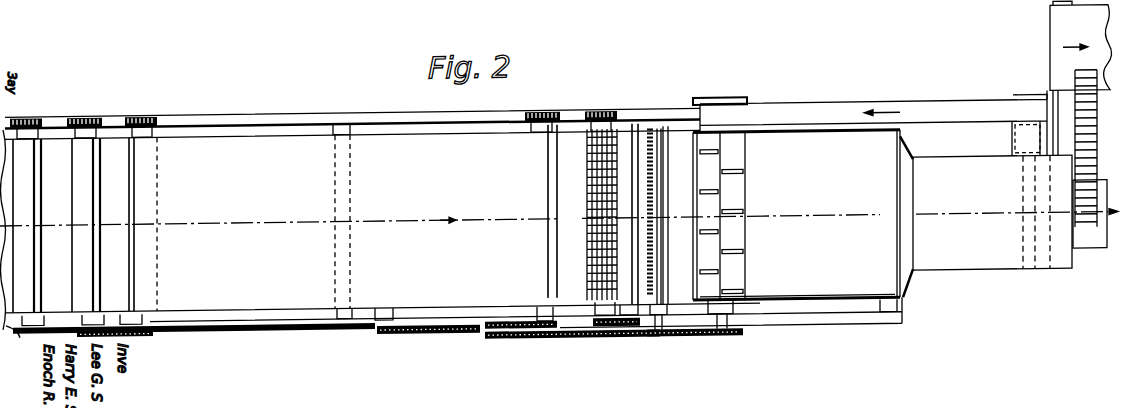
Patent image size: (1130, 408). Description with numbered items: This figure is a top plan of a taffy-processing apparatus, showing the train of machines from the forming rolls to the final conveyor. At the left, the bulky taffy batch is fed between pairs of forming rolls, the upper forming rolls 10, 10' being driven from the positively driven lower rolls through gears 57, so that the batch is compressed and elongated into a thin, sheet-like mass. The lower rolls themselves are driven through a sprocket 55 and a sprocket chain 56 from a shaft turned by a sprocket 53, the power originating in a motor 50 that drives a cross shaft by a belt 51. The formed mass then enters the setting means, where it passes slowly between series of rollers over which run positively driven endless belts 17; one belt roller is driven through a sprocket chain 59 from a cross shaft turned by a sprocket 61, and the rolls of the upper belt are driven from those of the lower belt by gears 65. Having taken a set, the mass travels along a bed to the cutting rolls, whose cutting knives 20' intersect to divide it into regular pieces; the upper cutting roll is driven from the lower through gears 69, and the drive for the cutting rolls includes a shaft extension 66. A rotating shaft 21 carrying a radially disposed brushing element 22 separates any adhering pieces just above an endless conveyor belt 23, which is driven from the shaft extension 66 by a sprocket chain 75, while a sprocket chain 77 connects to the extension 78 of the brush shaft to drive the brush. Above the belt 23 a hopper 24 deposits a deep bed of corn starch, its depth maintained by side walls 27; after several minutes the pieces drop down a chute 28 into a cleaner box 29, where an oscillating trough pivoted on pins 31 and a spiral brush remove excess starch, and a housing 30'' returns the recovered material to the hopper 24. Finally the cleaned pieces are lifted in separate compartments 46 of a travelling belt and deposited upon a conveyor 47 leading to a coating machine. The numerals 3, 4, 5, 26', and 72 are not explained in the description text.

The section line 3- 3 is at (286, 222).
The section line 4- 4 is at (735, 216).
The section line 5- 5 is at (1010, 212).
The upper forming roll 10 is at (43, 232).
The upper forming roll 10' is at (112, 231).
The endless belt 17 is at (257, 138).
The cutting knives 20' is at (591, 192).
The rotating shaft 21 is at (663, 141).
The brushing element 22 is at (652, 244).
The endless conveyor belt 23 is at (867, 296).
The hopper 24 is at (747, 187).
The bracket 26' is at (730, 331).
The side walls 27 is at (825, 307).
The chute 28 is at (913, 281).
The cleaner box 29 is at (986, 202).
The endless conveyor housing 30'' is at (873, 120).
The pins 31 is at (1017, 153).
The compartments 46 is at (1068, 170).
The conveyor 47 is at (1053, 56).
The motor 50 is at (447, 1).
The belt 51 is at (387, 5).
The sprocket 53 is at (262, 326).
The sprocket 55 is at (110, 334).
The sprocket chain 56 is at (52, 325).
The gears 57 is at (90, 120).
The sprocket chain 59 is at (523, 335).
The sprocket 61 is at (450, 339).
The gears 65 is at (575, 345).
The shaft extension 66 is at (605, 341).
The gears 69 is at (605, 121).
The bar 72 is at (705, 345).
The sprocket chain 75 is at (593, 315).
The sprocket chain 77 is at (637, 335).
The extension of brush shaft 78 is at (662, 345).